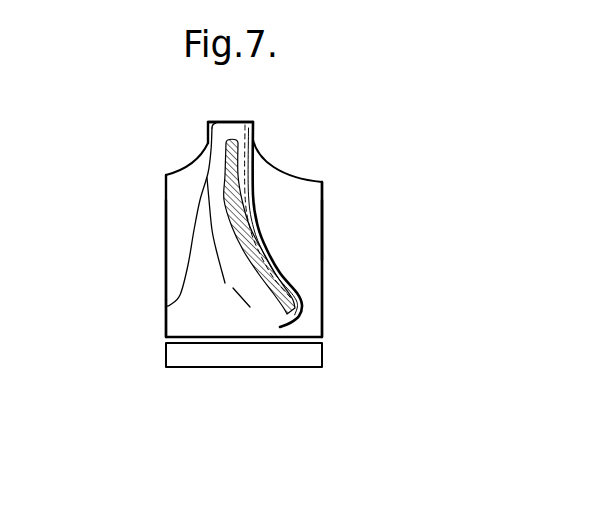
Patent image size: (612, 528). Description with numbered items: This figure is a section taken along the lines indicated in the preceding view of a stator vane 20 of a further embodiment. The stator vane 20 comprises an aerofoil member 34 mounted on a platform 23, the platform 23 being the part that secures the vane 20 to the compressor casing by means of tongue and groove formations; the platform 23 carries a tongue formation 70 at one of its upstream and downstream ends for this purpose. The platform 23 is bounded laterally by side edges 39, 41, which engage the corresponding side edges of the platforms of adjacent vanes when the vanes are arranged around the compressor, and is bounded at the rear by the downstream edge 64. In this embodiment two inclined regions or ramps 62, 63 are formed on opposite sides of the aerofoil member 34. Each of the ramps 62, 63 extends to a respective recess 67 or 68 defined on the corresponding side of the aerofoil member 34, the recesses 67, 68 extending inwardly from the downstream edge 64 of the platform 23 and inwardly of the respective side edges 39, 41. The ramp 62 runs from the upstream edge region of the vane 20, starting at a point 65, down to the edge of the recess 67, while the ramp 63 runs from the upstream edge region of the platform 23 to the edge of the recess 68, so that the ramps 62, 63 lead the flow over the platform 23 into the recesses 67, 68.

The stator vane 20 is at (199, 385).
The platform 23 is at (158, 317).
The aerofoil member 34 is at (270, 287).
The side edge 39 is at (322, 223).
The side edge 41 is at (166, 263).
The ramp 62 is at (293, 198).
The ramp 63 is at (176, 208).
The downstream edge 64 is at (250, 121).
The point 65 is at (292, 297).
The recess 67 is at (283, 172).
The recess 68 is at (190, 163).
The tongue formation 70 is at (254, 370).